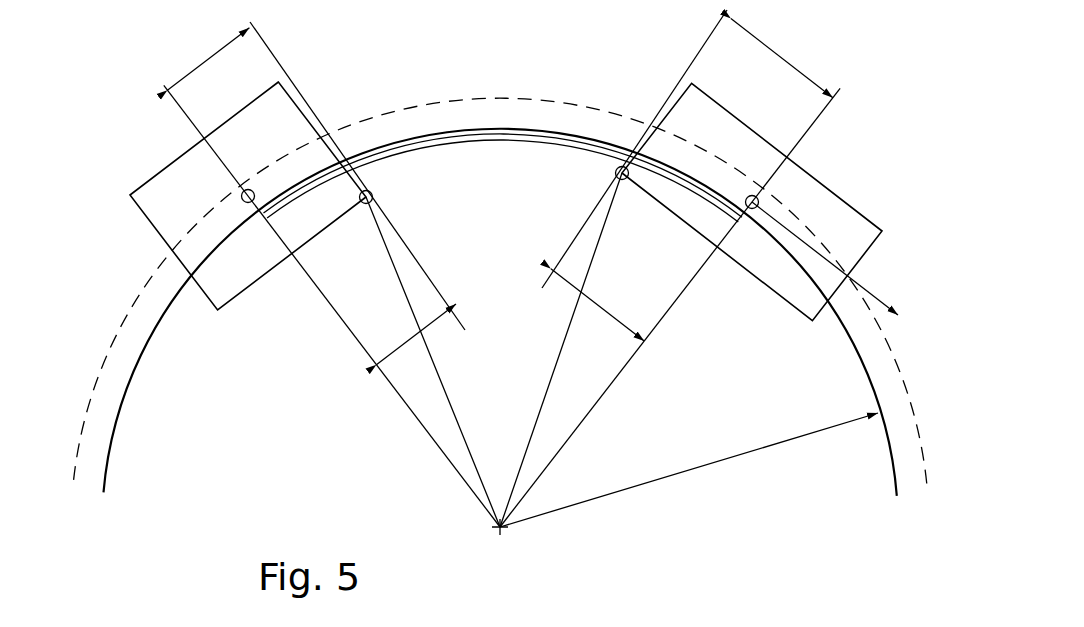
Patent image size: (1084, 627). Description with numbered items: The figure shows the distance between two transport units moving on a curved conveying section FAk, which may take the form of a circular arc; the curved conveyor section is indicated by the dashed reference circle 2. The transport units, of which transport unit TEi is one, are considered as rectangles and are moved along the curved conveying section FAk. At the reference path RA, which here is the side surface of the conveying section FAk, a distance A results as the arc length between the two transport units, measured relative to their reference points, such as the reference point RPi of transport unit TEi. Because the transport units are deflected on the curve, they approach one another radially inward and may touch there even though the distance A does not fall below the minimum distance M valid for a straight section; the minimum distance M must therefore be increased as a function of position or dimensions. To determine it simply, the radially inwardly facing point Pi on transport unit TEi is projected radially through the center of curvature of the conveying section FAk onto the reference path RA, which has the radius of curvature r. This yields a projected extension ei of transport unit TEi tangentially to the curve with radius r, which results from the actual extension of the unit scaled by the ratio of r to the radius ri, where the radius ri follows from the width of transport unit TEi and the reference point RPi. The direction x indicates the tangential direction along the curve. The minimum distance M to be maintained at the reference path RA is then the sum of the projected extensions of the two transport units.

The minimum distance M is at (489, 359).
The curved conveying section FAk is at (128, 399).
The reference path RA is at (893, 472).
The distance A is at (479, 178).
The reference circle 2 is at (568, 104).
The transport unit TEi is at (848, 197).
The reference point RPi is at (755, 209).
The radially inwardly facing point Pi is at (616, 177).
The radius ri is at (561, 350).
The radius of curvature r is at (689, 470).
The tangential coordinate x is at (828, 258).
The projected extension ei is at (782, 58).